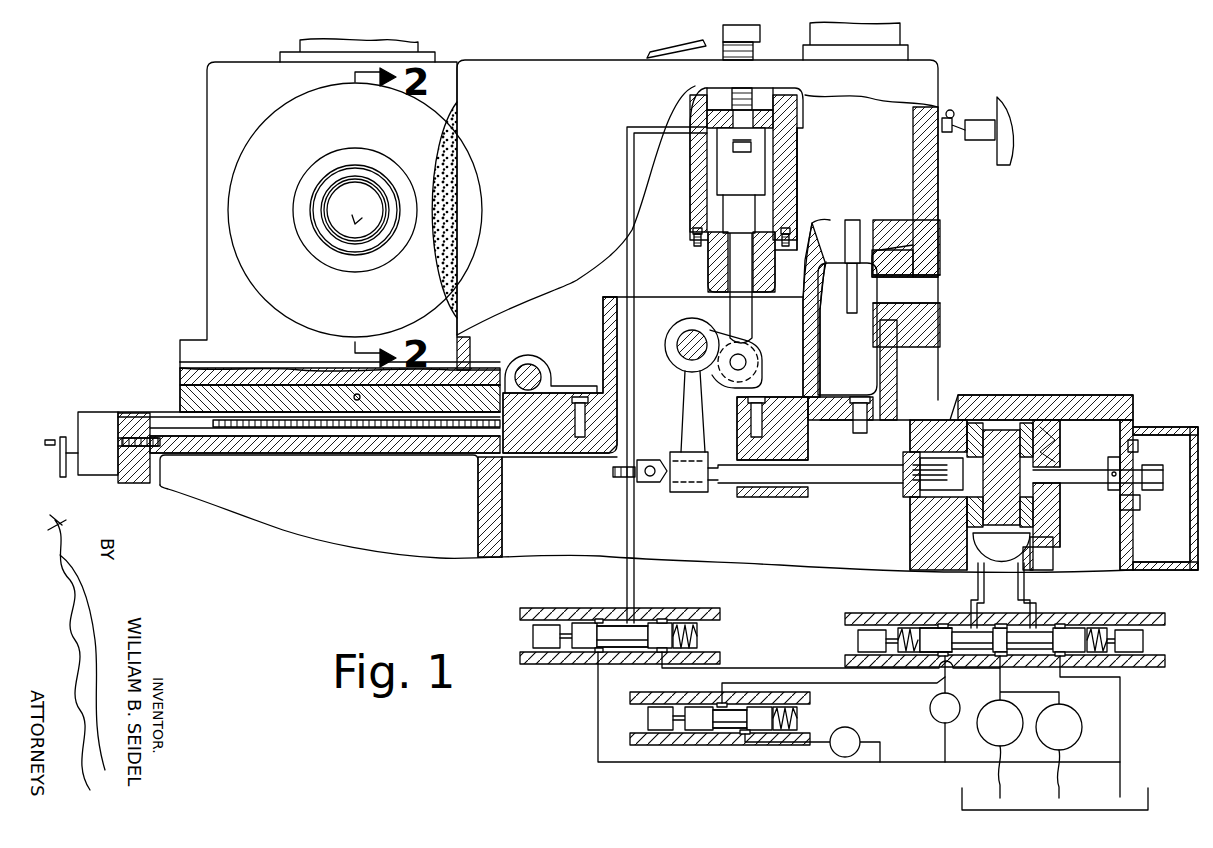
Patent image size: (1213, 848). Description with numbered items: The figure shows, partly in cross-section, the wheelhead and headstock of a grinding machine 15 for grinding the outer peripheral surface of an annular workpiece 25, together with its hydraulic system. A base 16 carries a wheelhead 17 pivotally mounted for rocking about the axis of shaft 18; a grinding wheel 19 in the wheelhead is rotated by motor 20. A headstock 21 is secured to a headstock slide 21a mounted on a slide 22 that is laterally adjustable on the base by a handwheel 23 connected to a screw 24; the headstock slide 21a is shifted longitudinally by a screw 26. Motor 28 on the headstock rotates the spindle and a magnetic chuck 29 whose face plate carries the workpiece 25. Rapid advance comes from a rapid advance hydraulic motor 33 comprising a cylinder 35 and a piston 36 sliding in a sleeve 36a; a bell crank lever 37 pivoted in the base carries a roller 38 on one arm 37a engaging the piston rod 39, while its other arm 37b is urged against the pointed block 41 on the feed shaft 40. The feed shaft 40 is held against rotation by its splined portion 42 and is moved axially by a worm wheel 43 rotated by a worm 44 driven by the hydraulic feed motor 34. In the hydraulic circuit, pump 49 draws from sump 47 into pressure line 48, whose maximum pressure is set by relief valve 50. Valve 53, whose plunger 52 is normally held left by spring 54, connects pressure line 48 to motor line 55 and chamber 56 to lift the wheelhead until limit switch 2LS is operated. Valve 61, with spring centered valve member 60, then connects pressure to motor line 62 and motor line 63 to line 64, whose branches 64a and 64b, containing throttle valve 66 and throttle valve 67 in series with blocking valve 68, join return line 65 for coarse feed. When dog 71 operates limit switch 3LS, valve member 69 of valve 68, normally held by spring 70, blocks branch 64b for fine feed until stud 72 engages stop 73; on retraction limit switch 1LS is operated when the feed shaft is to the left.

The grinding machine 15 is at (430, 582).
The base 16 is at (502, 503).
The wheelhead 17 is at (552, 60).
The shaft 18 is at (545, 367).
The grinding wheel 19 is at (398, 275).
The motor 20 is at (905, 45).
The headstock 21 is at (207, 112).
The headstock slide 21a is at (180, 374).
The slide 22 is at (180, 400).
The handwheel 23 is at (60, 437).
The screw 24 is at (230, 428).
The workpiece 25 is at (322, 212).
The screw 26 is at (362, 394).
The motor 28 is at (300, 40).
The magnetic chuck 29 is at (285, 107).
The rapid advance hydraulic motor 33 is at (800, 174).
The hydraulic feed motor 34 is at (1053, 555).
The cylinder 35 is at (798, 204).
The piston 36 is at (752, 180).
The sleeve 36a is at (692, 208).
The bell crank lever 37 is at (672, 338).
The arm 37a is at (765, 372).
The arm 37b is at (690, 492).
The roller 38 is at (746, 354).
The piston rod 39 is at (720, 275).
The feed shaft 40 is at (826, 485).
The block 41 is at (653, 483).
The splined portion 42 is at (903, 500).
The worm wheel 43 is at (1008, 425).
The worm 44 is at (1000, 540).
The sump 47 is at (1148, 798).
The pressure line 48 is at (788, 668).
The pump 49 is at (985, 705).
The relief valve 50 is at (1070, 710).
The valve plunger 52 is at (635, 650).
The valve 53 is at (583, 618).
The spring 54 is at (697, 641).
The motor line 55 is at (627, 181).
The chamber 56 is at (760, 147).
The valve member 60 is at (1040, 628).
The valve 61 is at (905, 626).
The motor line 62 is at (1032, 592).
The motor line 63 is at (970, 592).
The line 64 is at (940, 680).
The branch line 64a is at (945, 745).
The branch line 64b is at (834, 682).
The return line 65 is at (920, 765).
The throttle valve 66 is at (930, 715).
The throttle valve 67 is at (851, 727).
The blocking valve 68 is at (690, 705).
The valve member 69 is at (725, 734).
The spring 70 is at (783, 712).
The dog 71 is at (1108, 457).
The stud 72 is at (852, 315).
The stop 73 is at (846, 268).
The limit switch 1LS is at (1150, 530).
The limit switch 2LS is at (982, 140).
The limit switch 3LS is at (1136, 442).